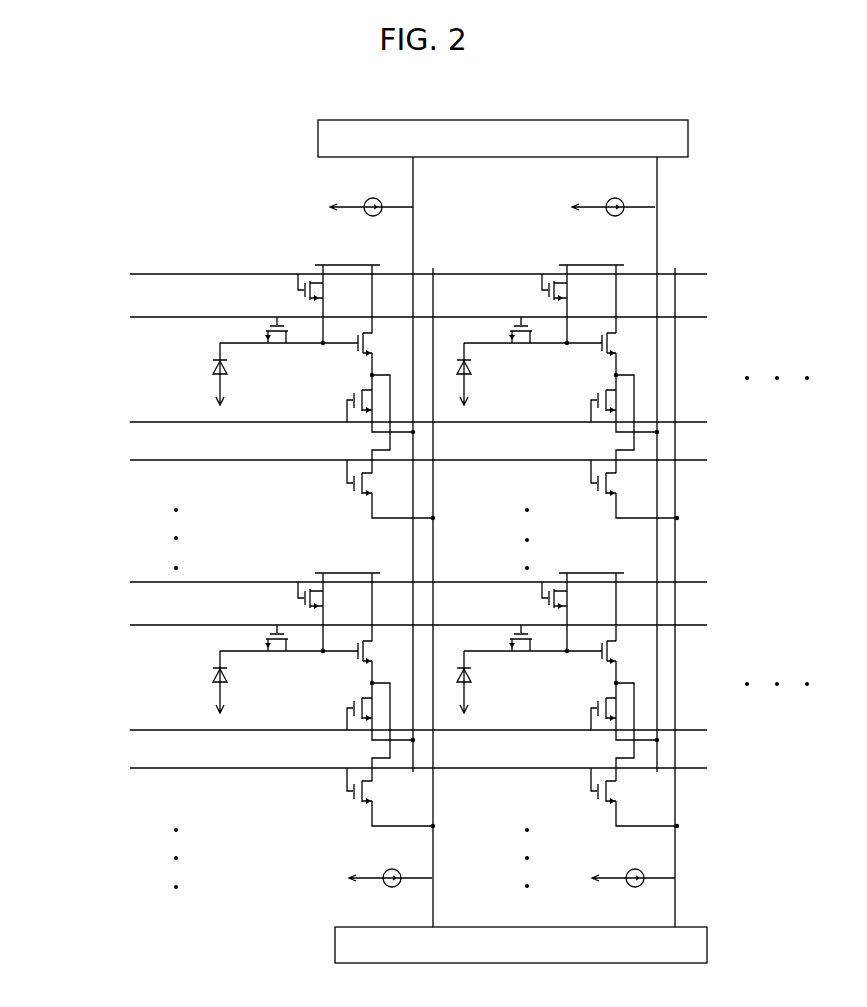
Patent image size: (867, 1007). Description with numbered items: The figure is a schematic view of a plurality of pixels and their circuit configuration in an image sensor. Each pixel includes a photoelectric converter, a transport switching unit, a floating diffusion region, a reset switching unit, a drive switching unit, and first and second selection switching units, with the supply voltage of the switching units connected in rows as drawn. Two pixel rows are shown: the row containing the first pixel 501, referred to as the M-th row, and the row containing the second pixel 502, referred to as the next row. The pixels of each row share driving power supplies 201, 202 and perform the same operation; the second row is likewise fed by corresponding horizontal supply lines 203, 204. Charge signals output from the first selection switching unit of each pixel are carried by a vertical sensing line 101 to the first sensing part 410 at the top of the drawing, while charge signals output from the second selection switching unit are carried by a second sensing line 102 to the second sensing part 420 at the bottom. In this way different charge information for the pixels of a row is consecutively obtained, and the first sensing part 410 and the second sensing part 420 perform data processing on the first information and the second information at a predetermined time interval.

The sensing line 101 is at (415, 478).
The sensing line 102 is at (435, 543).
The driving power supply 201 is at (155, 418).
The driving power supply 202 is at (158, 463).
The third selection line 203 is at (155, 726).
The fourth selection line 204 is at (158, 771).
The first sensing part 410 is at (688, 138).
The second sensing part 420 is at (707, 945).
The first pixel 501 is at (364, 386).
The second pixel 502 is at (364, 694).